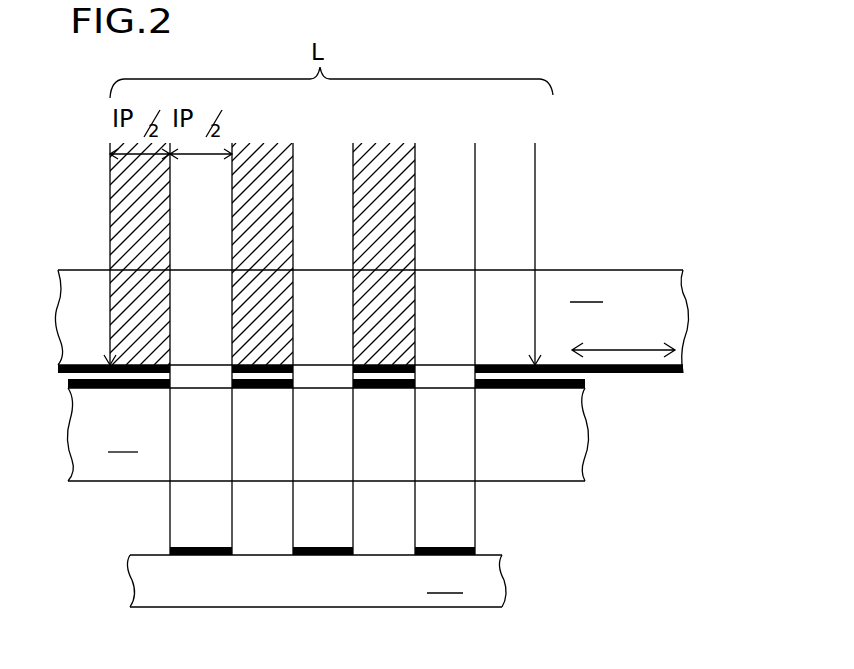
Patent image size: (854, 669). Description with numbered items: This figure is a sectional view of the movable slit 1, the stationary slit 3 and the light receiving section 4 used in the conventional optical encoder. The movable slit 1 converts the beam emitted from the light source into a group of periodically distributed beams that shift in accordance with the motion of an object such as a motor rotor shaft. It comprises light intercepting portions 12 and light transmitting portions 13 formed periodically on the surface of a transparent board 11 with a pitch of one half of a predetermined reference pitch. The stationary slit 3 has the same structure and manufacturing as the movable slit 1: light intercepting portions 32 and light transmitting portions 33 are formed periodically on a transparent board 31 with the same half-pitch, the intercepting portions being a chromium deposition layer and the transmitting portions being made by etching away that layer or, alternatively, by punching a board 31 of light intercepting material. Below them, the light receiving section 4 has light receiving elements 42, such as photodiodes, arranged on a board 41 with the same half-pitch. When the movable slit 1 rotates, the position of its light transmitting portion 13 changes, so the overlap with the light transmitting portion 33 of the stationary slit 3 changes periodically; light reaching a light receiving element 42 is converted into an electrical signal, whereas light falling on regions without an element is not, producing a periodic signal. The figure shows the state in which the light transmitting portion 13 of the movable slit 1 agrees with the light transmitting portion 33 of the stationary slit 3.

The movable slit 1 is at (651, 256).
The transparent board 11 is at (622, 315).
The light intercepting portions 12 is at (107, 360).
The light transmitting portions 13 is at (209, 350).
The stationary slit 3 is at (578, 497).
The transparent board 31 is at (125, 438).
The light intercepting portions 32 is at (97, 390).
The light transmitting portions 33 is at (209, 402).
The light receiving section 4 is at (455, 619).
The board 41 is at (445, 581).
The light receiving element 42 is at (192, 548).